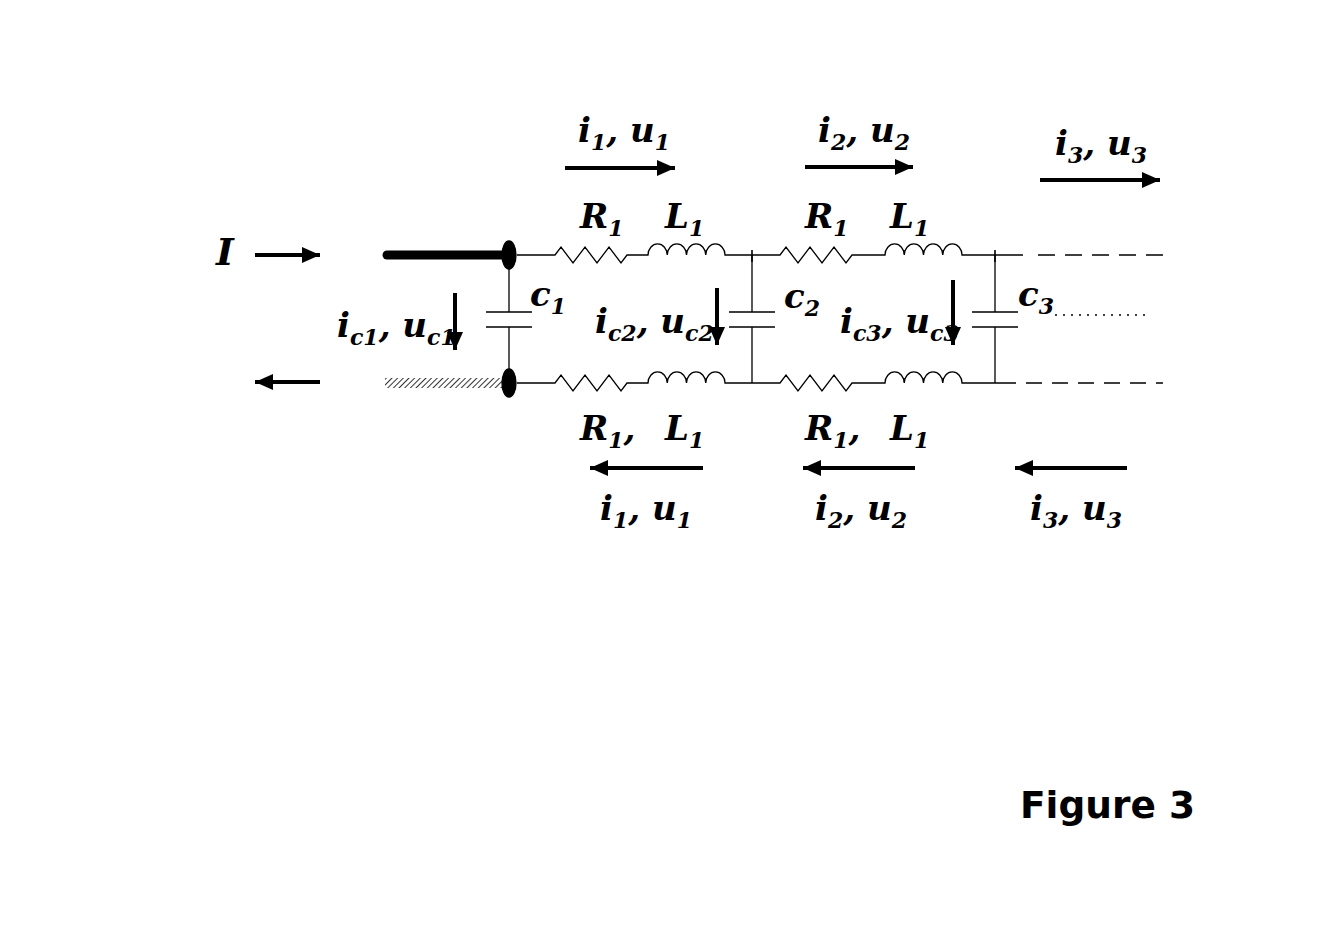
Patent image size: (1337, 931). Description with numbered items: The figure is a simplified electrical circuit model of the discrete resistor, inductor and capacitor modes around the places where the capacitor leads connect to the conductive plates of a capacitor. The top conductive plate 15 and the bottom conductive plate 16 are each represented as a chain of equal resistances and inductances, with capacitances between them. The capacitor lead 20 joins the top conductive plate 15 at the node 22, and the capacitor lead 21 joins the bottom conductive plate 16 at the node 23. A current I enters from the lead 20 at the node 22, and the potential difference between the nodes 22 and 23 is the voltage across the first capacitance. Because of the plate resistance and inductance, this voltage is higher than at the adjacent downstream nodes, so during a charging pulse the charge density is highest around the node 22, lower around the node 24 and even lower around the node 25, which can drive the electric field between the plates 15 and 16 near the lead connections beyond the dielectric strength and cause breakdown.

The top conductive plate 15 is at (1180, 252).
The bottom conductive plate 16 is at (1180, 386).
The capacitor lead 20 is at (402, 240).
The capacitor lead 21 is at (412, 392).
The node 22 is at (503, 230).
The node 23 is at (503, 392).
The node 24 is at (751, 230).
The node 25 is at (992, 230).